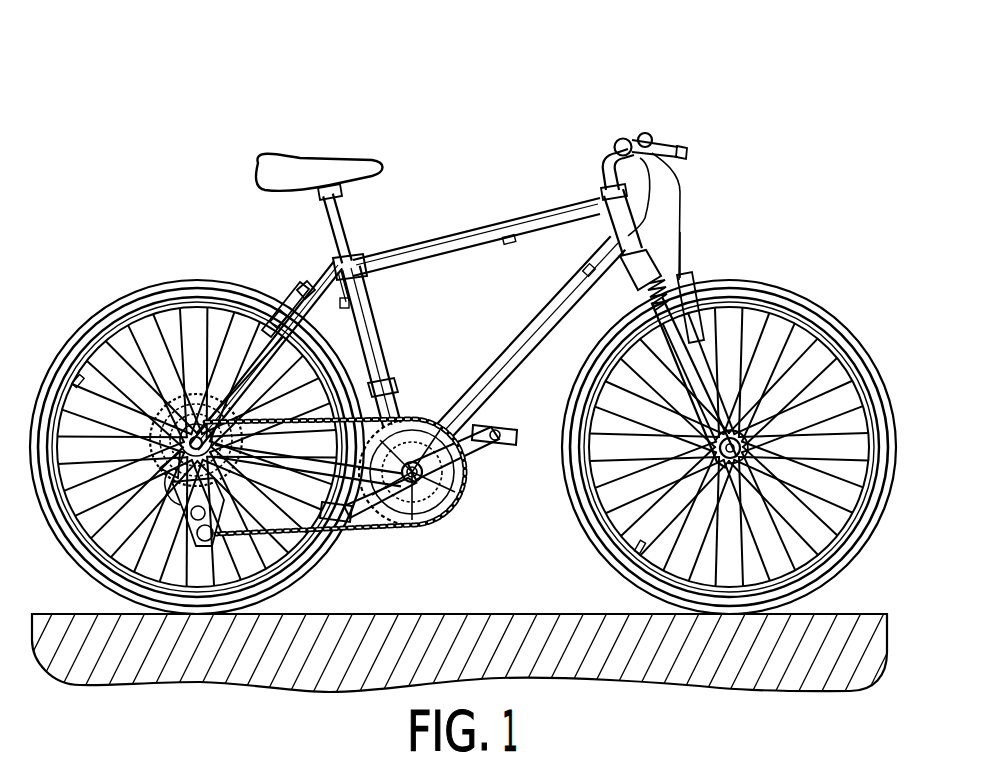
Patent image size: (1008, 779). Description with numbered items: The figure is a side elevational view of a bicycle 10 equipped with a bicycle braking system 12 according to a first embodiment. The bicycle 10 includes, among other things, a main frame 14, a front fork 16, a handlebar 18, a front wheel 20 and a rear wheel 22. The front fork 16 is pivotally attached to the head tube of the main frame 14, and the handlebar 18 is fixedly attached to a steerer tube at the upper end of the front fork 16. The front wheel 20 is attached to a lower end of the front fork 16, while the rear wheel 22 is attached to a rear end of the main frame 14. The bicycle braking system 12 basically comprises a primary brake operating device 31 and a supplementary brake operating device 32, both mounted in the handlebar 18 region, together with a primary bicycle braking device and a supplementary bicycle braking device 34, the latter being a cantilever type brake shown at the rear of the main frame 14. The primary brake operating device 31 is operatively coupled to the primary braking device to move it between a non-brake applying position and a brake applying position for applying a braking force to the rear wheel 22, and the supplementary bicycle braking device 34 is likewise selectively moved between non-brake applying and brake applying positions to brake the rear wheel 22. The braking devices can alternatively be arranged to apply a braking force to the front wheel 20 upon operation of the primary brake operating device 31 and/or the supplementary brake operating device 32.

The bicycle 10 is at (624, 103).
The bicycle braking system 12 is at (690, 128).
The main frame 14 is at (450, 236).
The front fork 16 is at (702, 386).
The handlebar 18 is at (612, 143).
The front wheel 20 is at (797, 292).
The rear wheel 22 is at (143, 290).
The primary brake operating device 31 is at (704, 153).
The supplementary brake operating device 32 is at (647, 128).
The supplementary bicycle braking device 34 is at (283, 288).